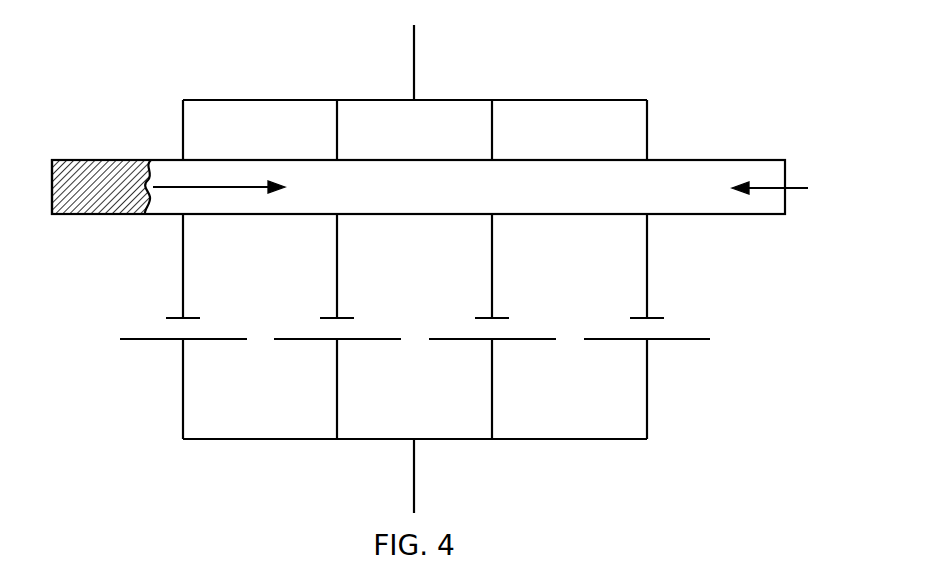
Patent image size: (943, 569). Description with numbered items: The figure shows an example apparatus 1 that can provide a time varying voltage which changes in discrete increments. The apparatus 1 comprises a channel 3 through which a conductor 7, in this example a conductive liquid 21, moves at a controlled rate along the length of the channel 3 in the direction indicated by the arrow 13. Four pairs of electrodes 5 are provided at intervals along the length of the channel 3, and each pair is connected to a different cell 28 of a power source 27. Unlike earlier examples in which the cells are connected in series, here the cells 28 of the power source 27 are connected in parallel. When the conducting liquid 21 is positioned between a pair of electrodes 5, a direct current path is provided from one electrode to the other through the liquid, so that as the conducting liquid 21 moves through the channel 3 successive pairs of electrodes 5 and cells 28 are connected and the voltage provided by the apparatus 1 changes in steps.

The apparatus 1 is at (705, 66).
The channel 3 is at (783, 188).
The electrodes 5 is at (183, 158).
The conductor 7 is at (75, 160).
The arrow 13 is at (173, 186).
The conductive liquid 21 is at (58, 233).
The power source 27 is at (700, 318).
The cells 28 is at (438, 426).